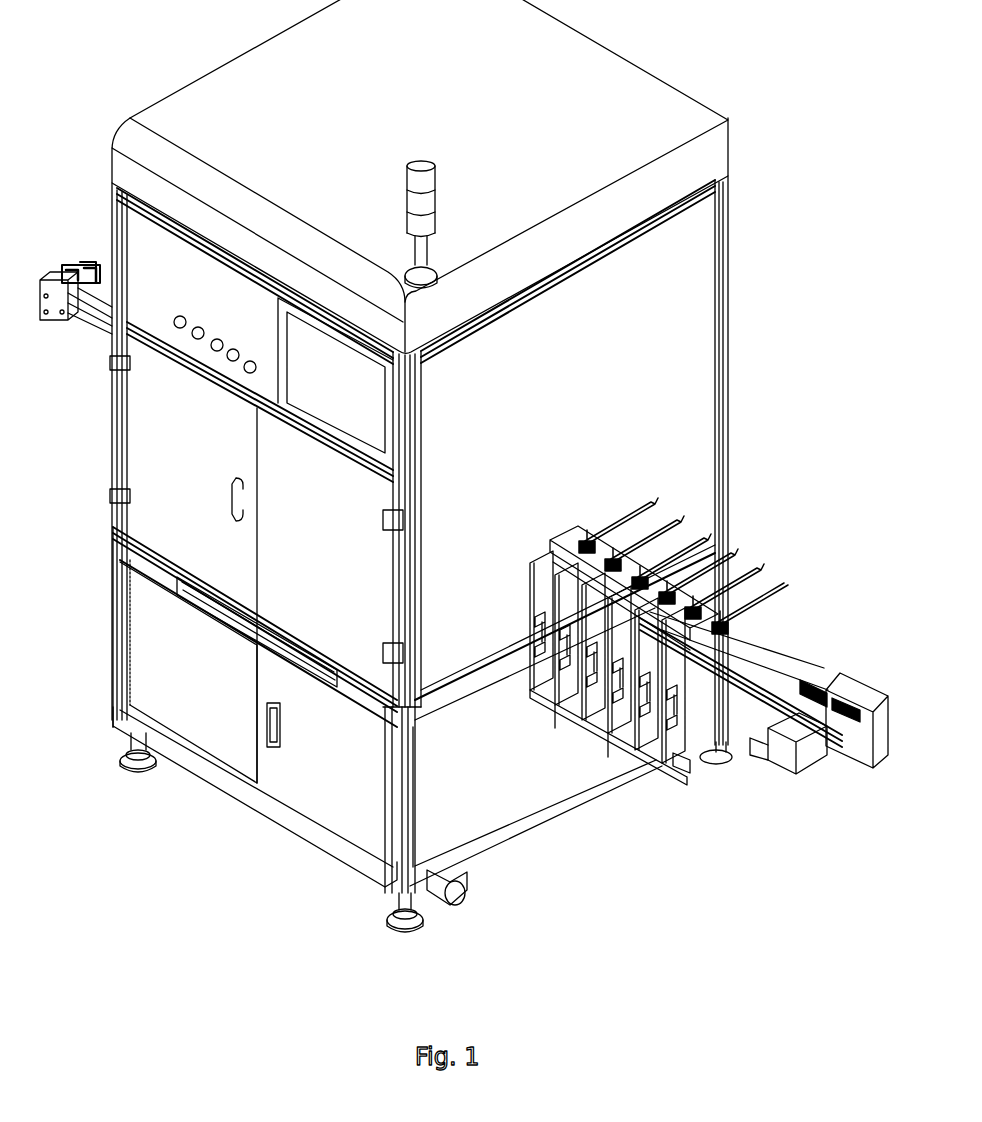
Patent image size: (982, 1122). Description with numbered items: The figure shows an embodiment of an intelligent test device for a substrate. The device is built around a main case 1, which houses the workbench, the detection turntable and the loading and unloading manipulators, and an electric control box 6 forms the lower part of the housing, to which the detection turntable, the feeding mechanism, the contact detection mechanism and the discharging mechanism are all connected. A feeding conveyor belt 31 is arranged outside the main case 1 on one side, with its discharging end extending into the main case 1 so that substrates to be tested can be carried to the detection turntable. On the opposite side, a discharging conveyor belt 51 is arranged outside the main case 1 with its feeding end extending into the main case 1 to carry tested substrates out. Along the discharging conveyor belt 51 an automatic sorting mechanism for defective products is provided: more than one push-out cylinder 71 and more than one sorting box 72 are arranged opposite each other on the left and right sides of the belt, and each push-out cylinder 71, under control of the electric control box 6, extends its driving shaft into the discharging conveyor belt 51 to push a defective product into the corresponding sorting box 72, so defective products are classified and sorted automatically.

The main case 1 is at (678, 393).
The electric control box 6 is at (215, 713).
The feeding conveyor belt 31 is at (92, 292).
The discharging conveyor belt 51 is at (788, 673).
The push-out cylinder 71 is at (735, 580).
The sorting box 72 is at (622, 682).